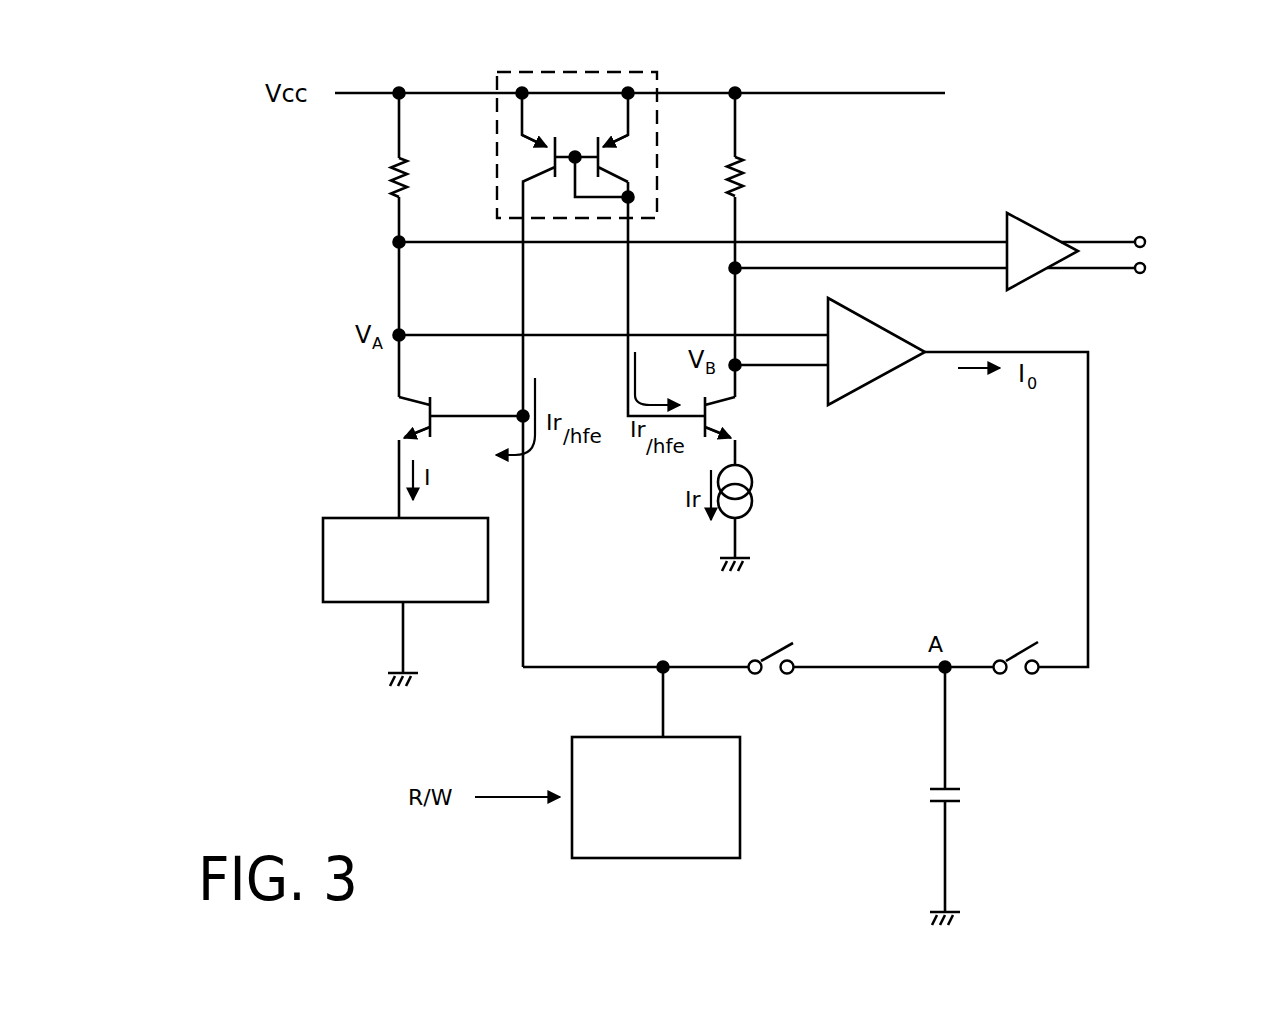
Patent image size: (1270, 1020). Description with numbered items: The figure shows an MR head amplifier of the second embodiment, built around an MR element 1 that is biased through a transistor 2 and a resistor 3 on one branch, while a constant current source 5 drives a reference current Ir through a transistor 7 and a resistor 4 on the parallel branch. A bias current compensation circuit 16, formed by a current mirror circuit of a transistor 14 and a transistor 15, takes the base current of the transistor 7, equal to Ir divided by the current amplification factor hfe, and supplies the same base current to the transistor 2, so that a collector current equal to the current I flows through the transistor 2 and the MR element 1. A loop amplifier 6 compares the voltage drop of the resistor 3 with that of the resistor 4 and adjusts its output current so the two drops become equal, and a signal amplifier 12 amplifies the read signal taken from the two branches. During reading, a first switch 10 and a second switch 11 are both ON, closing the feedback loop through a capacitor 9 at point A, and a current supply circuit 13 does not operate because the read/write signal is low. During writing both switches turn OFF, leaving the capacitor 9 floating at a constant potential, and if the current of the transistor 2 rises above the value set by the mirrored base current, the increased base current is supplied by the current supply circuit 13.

The MR element 1 is at (322, 558).
The transistor 2 is at (410, 427).
The resistor 3 is at (392, 183).
The resistor 4 is at (740, 178).
The constant current source 5 is at (755, 500).
The loop amplifier 6 is at (867, 382).
The transistor 7 is at (745, 415).
The capacitor 9 is at (968, 795).
The first switch 10 is at (1012, 677).
The second switch 11 is at (772, 675).
The signal amplifier 12 is at (1033, 225).
The current supply circuit 13 is at (742, 818).
The transistor 14 is at (530, 165).
The transistor 15 is at (612, 163).
The bias current compensation circuit 16 is at (580, 72).